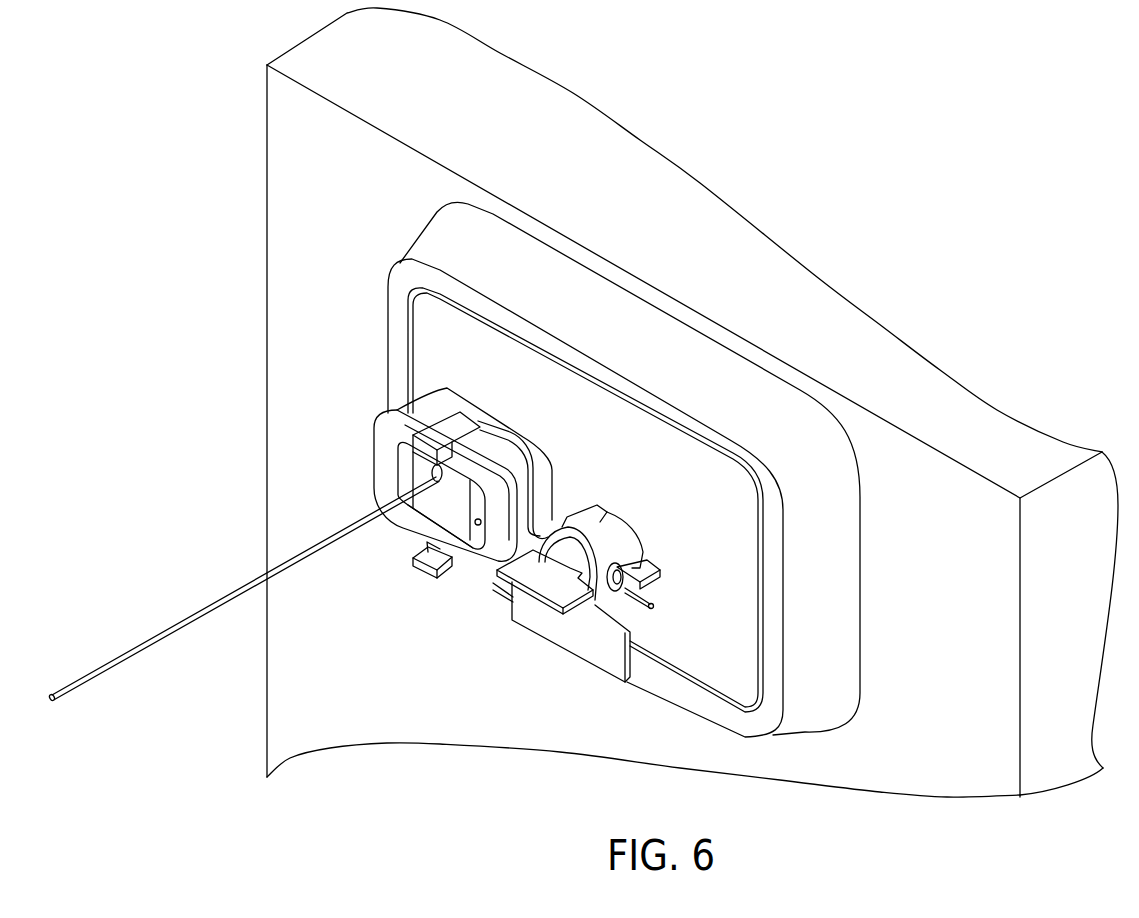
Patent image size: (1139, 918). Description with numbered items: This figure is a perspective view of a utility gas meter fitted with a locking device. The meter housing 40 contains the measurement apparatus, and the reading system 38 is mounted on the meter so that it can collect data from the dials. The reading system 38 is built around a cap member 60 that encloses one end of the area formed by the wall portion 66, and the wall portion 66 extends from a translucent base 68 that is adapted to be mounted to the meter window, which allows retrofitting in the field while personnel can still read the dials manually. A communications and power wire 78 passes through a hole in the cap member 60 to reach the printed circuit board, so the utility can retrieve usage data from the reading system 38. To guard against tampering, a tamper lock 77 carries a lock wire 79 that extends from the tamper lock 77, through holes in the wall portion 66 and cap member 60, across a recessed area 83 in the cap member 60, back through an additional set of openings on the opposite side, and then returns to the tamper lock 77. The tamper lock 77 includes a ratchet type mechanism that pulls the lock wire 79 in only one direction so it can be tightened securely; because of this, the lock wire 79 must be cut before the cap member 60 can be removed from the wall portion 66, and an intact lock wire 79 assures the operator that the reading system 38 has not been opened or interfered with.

The housing 40 is at (267, 240).
The reading system 38 is at (358, 397).
The cap member 60 is at (373, 467).
The wall portion 66 is at (445, 407).
The translucent base 68 is at (737, 563).
The tamper lock 77 is at (608, 530).
The communications and power wire 78 is at (130, 647).
The lock wire 79 is at (525, 448).
The recessed area 83 is at (435, 516).